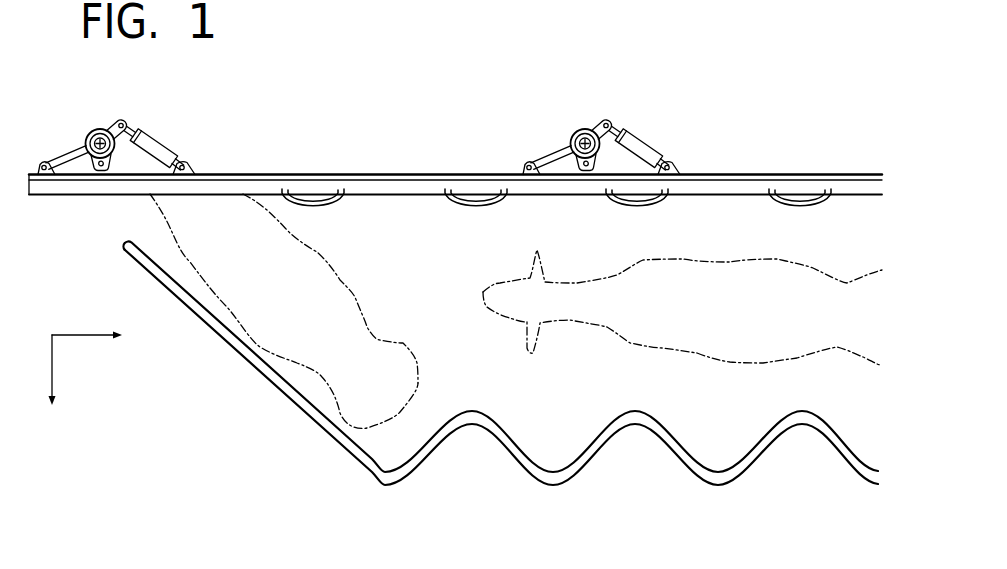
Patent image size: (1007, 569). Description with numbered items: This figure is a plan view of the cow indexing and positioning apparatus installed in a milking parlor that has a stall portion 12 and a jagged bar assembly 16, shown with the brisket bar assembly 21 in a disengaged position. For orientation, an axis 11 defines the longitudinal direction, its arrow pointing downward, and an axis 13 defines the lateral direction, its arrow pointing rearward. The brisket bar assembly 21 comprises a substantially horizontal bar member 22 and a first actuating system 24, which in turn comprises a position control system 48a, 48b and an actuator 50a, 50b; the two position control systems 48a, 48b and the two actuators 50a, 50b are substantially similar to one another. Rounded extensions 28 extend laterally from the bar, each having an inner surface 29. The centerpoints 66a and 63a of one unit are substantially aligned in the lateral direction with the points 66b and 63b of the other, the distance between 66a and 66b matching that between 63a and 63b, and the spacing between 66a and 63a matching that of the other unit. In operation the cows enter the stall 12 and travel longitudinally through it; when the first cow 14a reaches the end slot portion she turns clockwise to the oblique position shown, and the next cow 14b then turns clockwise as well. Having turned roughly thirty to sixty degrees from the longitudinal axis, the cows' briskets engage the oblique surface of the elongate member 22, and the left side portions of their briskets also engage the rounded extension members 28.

The longitudinal axis 11 is at (77, 335).
The stall portion 12 is at (462, 342).
The lateral axis 13 is at (55, 362).
The first cow 14a is at (355, 297).
The second cow 14b is at (747, 258).
The jagged bar assembly 16 is at (593, 452).
The brisket bar assembly 21 is at (366, 166).
The horizontal bar member 22 is at (388, 187).
The first actuating system 24 is at (385, 113).
The rounded extensions 28 is at (320, 200).
The inner surface 29 is at (342, 195).
The position control system 48a is at (90, 111).
The position control system 48b is at (556, 121).
The actuator 50a is at (185, 145).
The actuator 50b is at (680, 147).
The centerpoint 63a is at (39, 138).
The centerpoint 63b is at (501, 148).
The centerpoint 66a is at (58, 121).
The centerpoint 66b is at (522, 131).